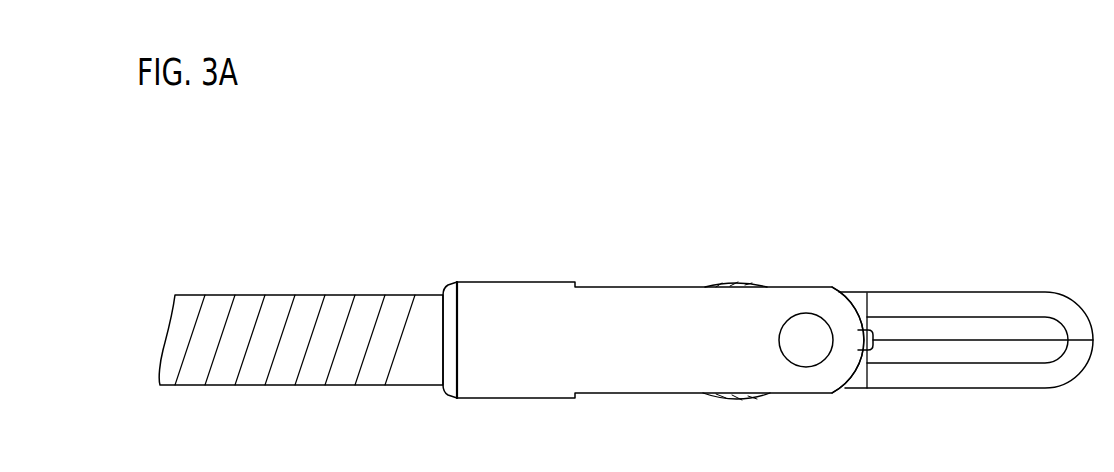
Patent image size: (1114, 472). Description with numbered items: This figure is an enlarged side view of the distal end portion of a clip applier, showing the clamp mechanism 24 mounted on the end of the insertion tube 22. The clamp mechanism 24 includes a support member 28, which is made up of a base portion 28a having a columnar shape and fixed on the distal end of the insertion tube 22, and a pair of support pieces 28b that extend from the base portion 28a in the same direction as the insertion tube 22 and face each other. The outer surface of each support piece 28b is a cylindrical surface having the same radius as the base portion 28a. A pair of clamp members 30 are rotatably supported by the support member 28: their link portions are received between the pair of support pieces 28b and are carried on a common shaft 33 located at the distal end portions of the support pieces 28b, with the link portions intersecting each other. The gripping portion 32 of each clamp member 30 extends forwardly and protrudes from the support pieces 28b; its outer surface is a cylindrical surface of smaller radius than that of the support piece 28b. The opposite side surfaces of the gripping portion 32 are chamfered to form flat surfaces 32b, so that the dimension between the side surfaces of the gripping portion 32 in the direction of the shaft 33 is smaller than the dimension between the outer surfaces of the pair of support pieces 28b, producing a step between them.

The insertion tube 22 is at (308, 295).
The clamp mechanism 24 is at (803, 245).
The support member 28 is at (558, 281).
The base portion 28a is at (502, 298).
The support pieces 28b is at (647, 313).
The clamp members 30 is at (858, 268).
The gripping portion 32 is at (913, 292).
The flat surfaces 32b is at (1005, 353).
The shaft 33 is at (799, 313).